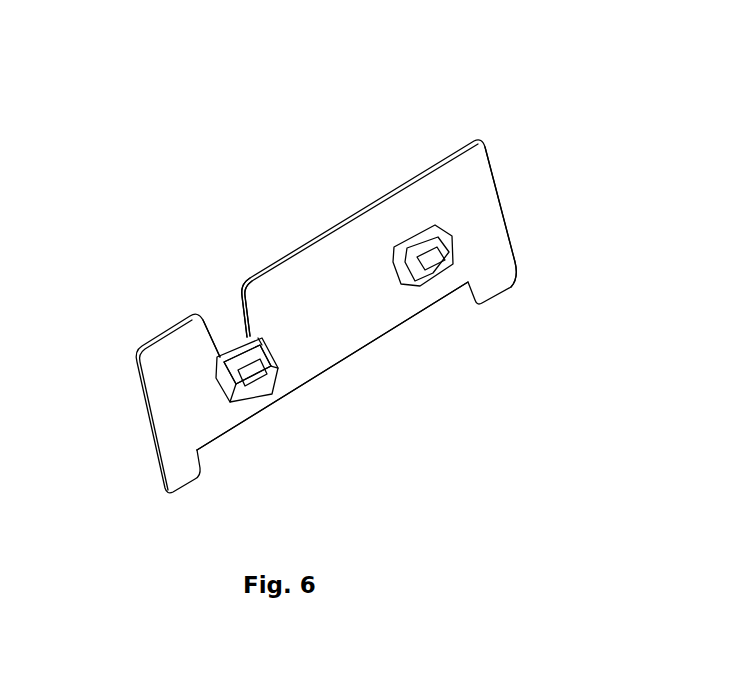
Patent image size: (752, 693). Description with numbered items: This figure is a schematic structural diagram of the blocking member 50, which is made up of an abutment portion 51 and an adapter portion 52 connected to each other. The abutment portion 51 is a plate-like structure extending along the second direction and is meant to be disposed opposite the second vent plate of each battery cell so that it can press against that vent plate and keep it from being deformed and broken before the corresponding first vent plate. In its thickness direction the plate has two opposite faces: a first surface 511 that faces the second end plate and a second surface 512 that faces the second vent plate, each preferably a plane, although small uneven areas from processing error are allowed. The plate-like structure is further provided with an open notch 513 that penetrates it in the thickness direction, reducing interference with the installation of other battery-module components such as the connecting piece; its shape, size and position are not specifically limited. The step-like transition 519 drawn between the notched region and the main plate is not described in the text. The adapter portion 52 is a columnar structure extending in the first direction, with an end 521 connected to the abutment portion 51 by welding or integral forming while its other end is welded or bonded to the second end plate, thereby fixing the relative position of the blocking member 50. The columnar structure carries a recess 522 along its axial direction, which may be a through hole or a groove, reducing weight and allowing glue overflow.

The blocking member 50 is at (262, 48).
The abutment portion 51 is at (366, 191).
The first surface 511 is at (504, 198).
The second surface 512 is at (138, 427).
The open notch 513 is at (240, 449).
The step portion 519 is at (205, 293).
The adapter portion 52 is at (265, 396).
The end of the columnar structure 521 is at (268, 372).
The recess 522 is at (265, 358).